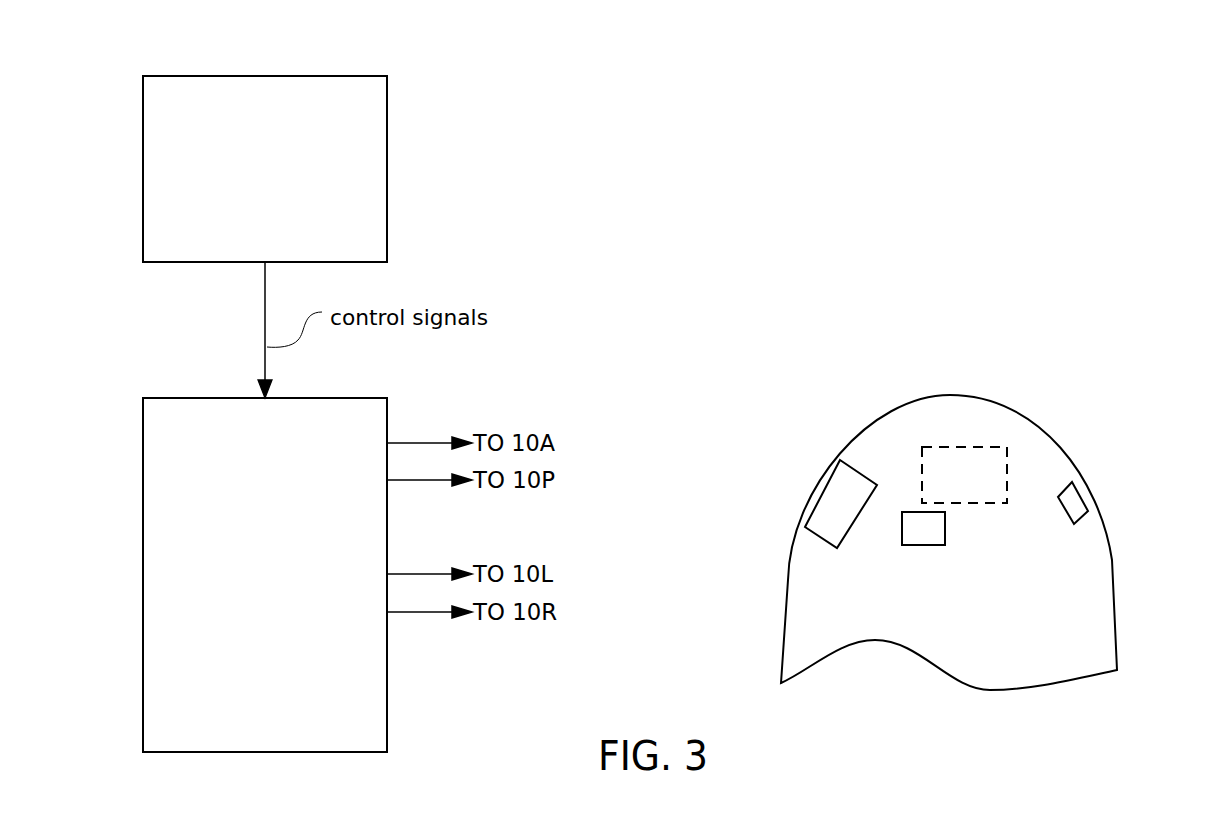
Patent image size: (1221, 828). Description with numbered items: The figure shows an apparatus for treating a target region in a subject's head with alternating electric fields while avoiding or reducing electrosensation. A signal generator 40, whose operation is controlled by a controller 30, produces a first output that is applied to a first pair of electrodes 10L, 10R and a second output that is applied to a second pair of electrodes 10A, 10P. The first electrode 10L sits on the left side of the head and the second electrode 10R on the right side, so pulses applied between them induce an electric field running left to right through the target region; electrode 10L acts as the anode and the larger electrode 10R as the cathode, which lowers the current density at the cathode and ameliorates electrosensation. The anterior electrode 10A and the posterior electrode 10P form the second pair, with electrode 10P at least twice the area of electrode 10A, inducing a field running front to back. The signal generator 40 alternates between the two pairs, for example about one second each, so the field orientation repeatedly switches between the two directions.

The controller 30 is at (142, 167).
The signal generator 40 is at (142, 578).
The anterior electrode 10A is at (900, 530).
The posterior electrode 10P is at (1007, 475).
The first electrode 10L is at (1085, 495).
The second electrode 10R is at (818, 493).